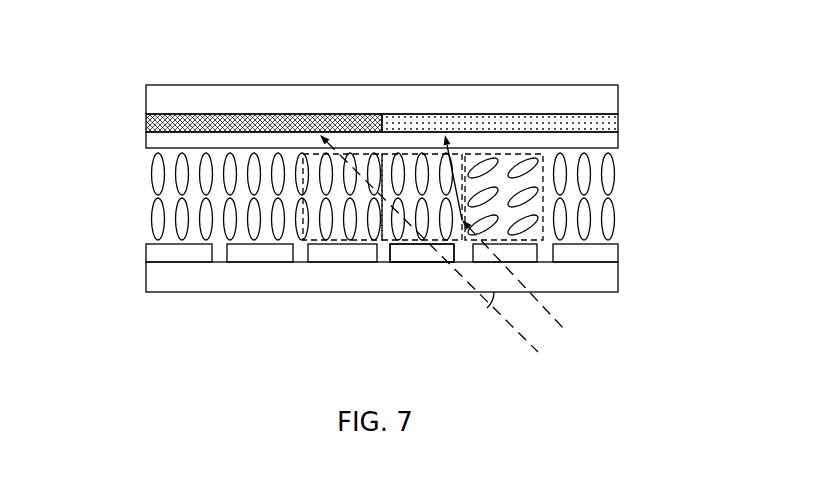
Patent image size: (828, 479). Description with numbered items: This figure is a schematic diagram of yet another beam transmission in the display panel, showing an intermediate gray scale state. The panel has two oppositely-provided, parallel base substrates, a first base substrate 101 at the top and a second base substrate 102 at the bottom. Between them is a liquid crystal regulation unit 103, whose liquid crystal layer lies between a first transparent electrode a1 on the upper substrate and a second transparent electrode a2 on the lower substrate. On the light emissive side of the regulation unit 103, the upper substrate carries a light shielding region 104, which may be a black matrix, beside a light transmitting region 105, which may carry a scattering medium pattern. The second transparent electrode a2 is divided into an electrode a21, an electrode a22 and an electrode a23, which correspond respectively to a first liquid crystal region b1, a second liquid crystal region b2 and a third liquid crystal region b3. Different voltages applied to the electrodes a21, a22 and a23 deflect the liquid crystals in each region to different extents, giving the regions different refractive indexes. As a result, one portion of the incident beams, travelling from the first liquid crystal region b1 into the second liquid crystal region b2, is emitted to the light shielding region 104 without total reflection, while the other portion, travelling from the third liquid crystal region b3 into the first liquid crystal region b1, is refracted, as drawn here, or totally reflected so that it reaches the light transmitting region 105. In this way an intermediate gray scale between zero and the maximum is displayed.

The first base substrate 101 is at (137, 97).
The second base substrate 102 is at (137, 280).
The liquid crystal regulation unit 103 is at (135, 131).
The light shielding region 104 is at (264, 83).
The light transmitting region 105 is at (539, 83).
The first transparent electrode a1 is at (628, 138).
The second transparent electrode a2 is at (628, 256).
The electrode a21 is at (378, 294).
The electrode a22 is at (296, 294).
The electrode a23 is at (582, 285).
The first liquid crystal region b1 is at (418, 146).
The second liquid crystal region b2 is at (348, 146).
The third liquid crystal region b3 is at (495, 146).